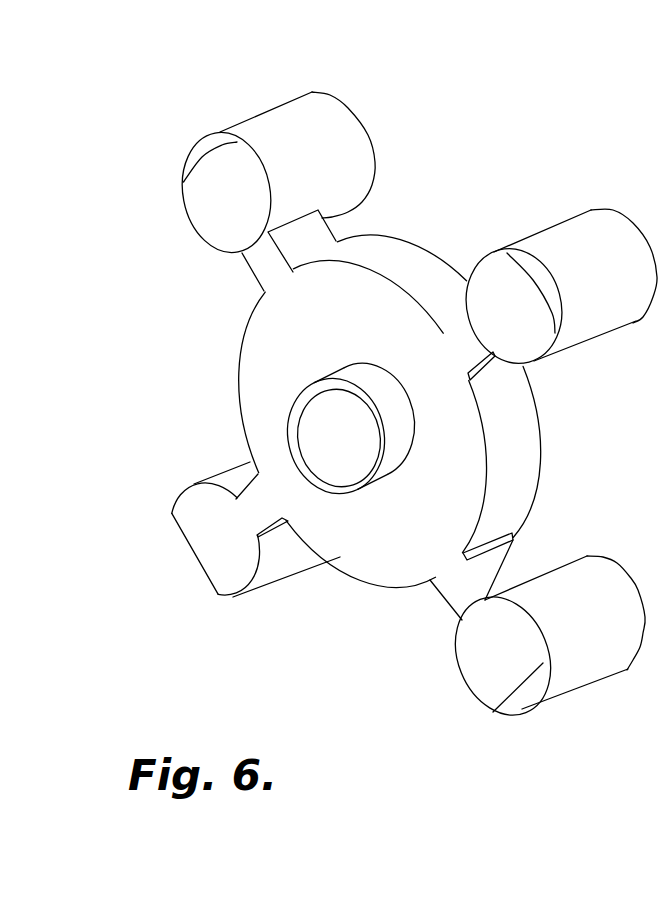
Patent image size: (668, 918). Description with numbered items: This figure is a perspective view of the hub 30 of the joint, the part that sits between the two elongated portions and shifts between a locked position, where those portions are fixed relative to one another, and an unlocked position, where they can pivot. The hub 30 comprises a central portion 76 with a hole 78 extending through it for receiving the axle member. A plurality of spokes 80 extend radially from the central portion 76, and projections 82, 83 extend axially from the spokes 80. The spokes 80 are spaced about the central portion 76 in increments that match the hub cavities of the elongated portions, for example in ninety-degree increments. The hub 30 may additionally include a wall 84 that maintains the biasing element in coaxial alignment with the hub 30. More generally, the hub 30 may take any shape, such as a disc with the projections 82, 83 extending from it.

The hub 30 is at (535, 116).
The central portion 76 is at (270, 348).
The hole 78 is at (317, 435).
The spokes 80 is at (467, 343).
The projection 82 is at (255, 149).
The projection 83 is at (222, 192).
The wall 84 is at (284, 510).